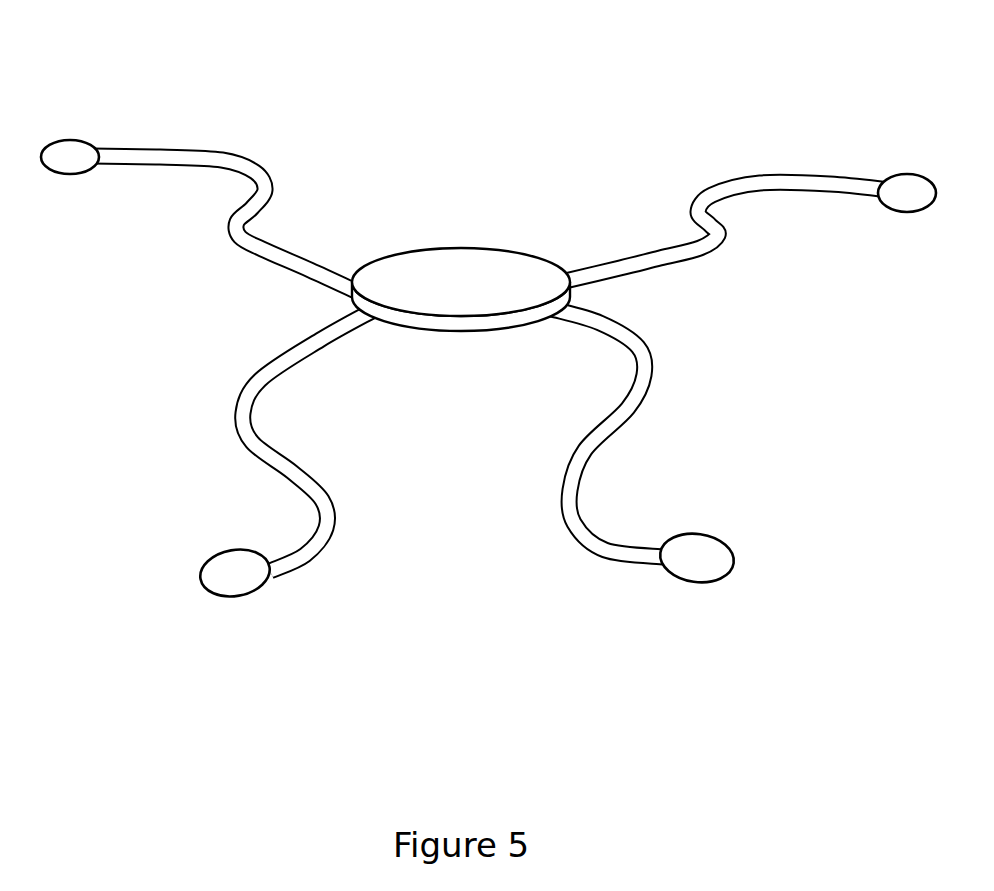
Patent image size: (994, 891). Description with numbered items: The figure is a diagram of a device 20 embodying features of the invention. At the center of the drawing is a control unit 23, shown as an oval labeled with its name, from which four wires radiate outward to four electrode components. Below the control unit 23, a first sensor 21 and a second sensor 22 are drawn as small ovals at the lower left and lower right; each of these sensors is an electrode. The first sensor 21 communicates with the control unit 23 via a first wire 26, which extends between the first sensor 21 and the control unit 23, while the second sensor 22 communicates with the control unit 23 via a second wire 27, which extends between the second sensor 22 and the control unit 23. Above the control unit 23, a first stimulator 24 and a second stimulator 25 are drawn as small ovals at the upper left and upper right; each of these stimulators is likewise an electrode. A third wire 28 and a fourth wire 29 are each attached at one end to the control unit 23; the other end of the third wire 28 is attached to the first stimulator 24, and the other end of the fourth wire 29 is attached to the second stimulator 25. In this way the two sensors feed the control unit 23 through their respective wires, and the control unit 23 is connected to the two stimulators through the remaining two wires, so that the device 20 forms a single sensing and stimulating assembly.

The device 20 is at (738, 372).
The first sensor 21 is at (225, 582).
The second sensor 22 is at (703, 562).
The control unit 23 is at (458, 247).
The first stimulator 24 is at (70, 157).
The second stimulator 25 is at (905, 192).
The first wire 26 is at (317, 505).
The second wire 27 is at (570, 507).
The third wire 28 is at (222, 162).
The fourth wire 29 is at (752, 178).